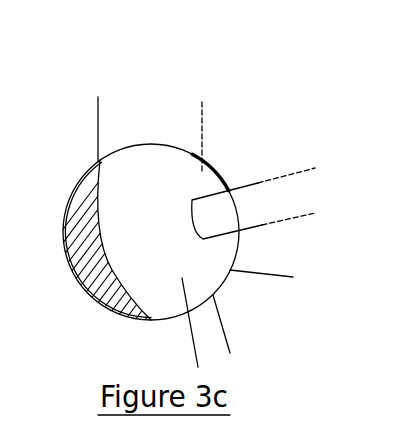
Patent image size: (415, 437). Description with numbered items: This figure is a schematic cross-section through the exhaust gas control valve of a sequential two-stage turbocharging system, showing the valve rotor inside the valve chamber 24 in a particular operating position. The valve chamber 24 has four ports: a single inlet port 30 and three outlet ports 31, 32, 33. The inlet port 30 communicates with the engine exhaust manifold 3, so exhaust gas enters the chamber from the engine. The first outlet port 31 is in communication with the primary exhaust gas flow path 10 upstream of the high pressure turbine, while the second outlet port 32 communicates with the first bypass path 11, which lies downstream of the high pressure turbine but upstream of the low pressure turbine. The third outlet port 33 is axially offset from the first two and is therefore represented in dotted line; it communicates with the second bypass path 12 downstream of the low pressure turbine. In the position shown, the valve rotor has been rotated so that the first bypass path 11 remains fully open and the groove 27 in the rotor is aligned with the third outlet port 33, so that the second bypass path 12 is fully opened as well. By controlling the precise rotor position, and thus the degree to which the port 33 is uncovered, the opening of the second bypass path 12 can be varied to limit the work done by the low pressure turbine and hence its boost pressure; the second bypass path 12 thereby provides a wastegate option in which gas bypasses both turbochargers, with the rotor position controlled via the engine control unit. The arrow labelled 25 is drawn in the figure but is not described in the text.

The exhaust manifold 3 is at (141, 130).
The primary exhaust gas flow path 10 is at (248, 240).
The first bypass path 11 is at (187, 275).
The second bypass path 12 is at (220, 218).
The valve chamber 24 is at (76, 192).
The radiation direction 25 is at (150, 292).
The groove 27 is at (219, 190).
The inlet port 30 is at (98, 125).
The first outlet port 31 is at (267, 278).
The second outlet port 32 is at (220, 312).
The third outlet port 33 is at (263, 179).